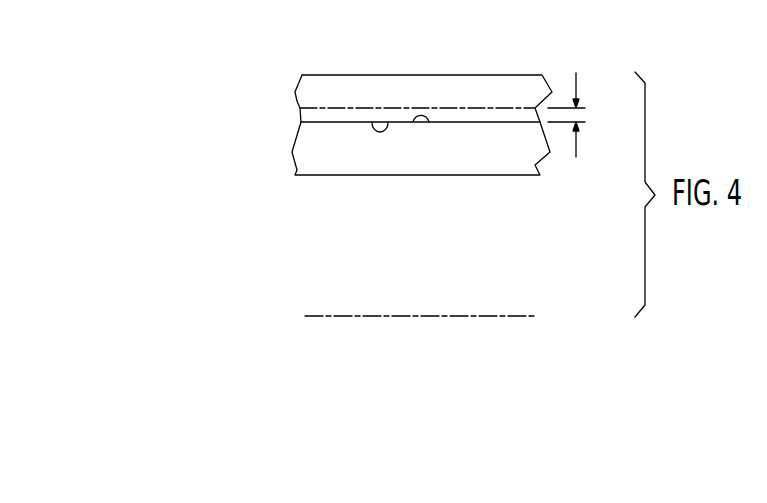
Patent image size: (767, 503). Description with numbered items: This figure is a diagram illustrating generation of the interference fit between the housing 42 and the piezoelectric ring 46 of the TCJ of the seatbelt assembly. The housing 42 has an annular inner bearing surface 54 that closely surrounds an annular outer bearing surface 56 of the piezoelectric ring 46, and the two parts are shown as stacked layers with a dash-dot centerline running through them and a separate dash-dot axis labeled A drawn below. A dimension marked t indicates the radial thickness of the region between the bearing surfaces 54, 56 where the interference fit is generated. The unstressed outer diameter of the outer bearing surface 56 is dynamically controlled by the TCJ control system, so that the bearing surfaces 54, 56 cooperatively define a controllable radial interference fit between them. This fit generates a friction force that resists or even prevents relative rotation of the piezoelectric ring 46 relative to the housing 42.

The housing 42 is at (297, 101).
The piezoelectric ring 46 is at (292, 152).
The annular inner bearing surface 54 is at (372, 123).
The annular outer bearing surface 56 is at (429, 123).
The thickness t is at (576, 150).
The axis A is at (418, 316).